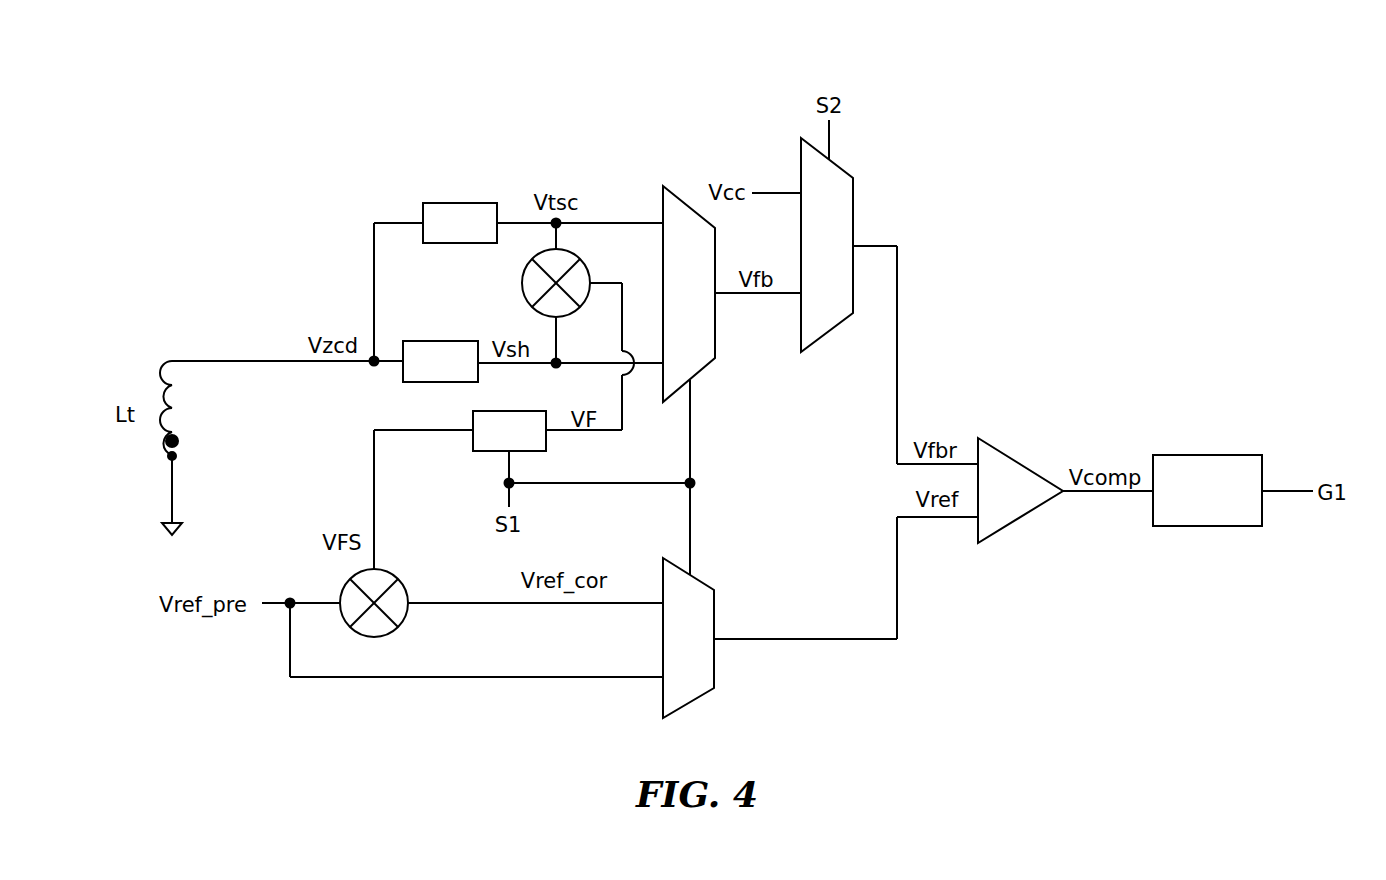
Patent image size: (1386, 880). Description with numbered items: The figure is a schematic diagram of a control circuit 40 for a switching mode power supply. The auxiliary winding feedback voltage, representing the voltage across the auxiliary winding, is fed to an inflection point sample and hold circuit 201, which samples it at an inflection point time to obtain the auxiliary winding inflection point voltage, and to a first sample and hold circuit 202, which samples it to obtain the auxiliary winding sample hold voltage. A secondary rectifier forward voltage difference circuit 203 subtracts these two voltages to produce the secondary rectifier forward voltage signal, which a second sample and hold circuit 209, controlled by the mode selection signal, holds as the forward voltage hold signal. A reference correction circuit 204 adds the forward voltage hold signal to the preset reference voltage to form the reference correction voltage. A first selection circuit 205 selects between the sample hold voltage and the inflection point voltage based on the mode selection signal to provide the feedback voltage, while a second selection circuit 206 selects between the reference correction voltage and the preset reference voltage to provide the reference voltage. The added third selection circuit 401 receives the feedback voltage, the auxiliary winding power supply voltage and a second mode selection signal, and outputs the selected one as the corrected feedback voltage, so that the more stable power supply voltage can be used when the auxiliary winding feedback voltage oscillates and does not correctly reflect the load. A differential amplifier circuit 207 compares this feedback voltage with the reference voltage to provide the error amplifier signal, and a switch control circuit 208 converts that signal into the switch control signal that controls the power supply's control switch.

The control circuit 40 is at (1235, 117).
The inflection point sample and hold circuit 201 is at (460, 223).
The first sample and hold circuit 202 is at (440, 361).
The secondary rectifier forward voltage difference circuit 203 is at (527, 306).
The reference correction circuit 204 is at (403, 586).
The first selection circuit 205 is at (689, 294).
The second selection circuit 206 is at (688, 638).
The differential amplifier circuit 207 is at (1020, 490).
The switch control circuit 208 is at (1207, 490).
The second sample and hold circuit 209 is at (509, 431).
The third selection circuit 401 is at (827, 245).